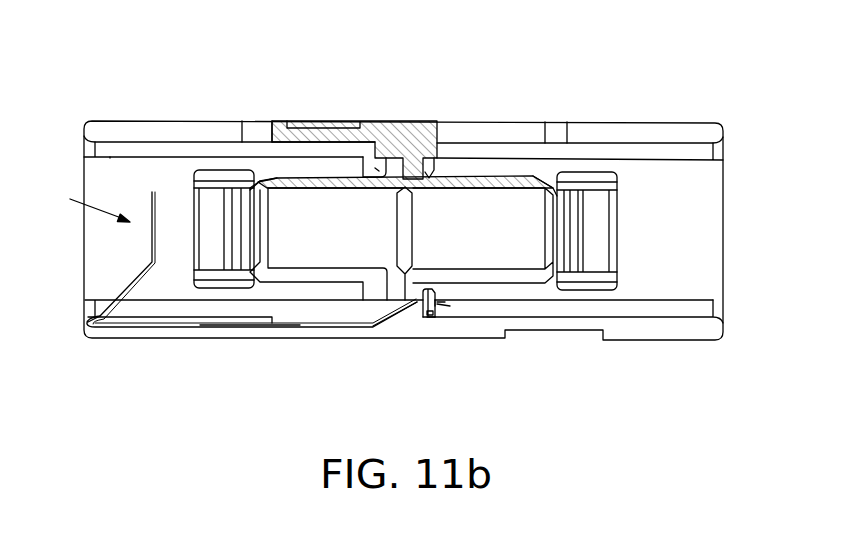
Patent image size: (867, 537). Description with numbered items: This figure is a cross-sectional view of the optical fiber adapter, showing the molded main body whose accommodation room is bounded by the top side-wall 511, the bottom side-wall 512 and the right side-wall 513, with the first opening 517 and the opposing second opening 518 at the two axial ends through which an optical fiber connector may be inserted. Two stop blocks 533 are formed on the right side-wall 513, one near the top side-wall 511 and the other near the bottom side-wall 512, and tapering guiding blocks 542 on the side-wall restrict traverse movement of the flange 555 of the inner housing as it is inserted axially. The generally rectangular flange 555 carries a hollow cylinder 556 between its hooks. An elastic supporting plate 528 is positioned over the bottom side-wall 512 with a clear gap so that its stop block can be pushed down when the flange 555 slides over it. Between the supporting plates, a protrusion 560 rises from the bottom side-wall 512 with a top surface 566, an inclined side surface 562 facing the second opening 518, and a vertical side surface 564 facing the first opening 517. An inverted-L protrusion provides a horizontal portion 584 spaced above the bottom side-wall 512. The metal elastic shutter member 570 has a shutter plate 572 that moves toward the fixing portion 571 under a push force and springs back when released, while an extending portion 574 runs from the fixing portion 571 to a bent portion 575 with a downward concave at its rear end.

The top side-wall 511 is at (280, 122).
The bottom side-wall 512 is at (207, 336).
The right side-wall 513 is at (182, 178).
The first opening 517 is at (700, 230).
The second opening 518 is at (100, 231).
The elastic supporting plate 528 is at (440, 303).
The stop block 533 is at (376, 168).
The guiding block 542 is at (428, 166).
The flange 555 is at (413, 288).
The hollow cylinder 556 is at (277, 181).
The protrusion 560 is at (424, 310).
The inclined side surface 562 is at (418, 303).
The vertical side surface 564 is at (437, 305).
The top surface 566 is at (437, 305).
The elastic shutter member 570 is at (77, 203).
The fixing portion 571 is at (110, 328).
The shutter plate 572 is at (152, 237).
The extending portion 574 is at (316, 324).
The bent portion 575 is at (420, 308).
The horizontal portion 584 is at (160, 318).